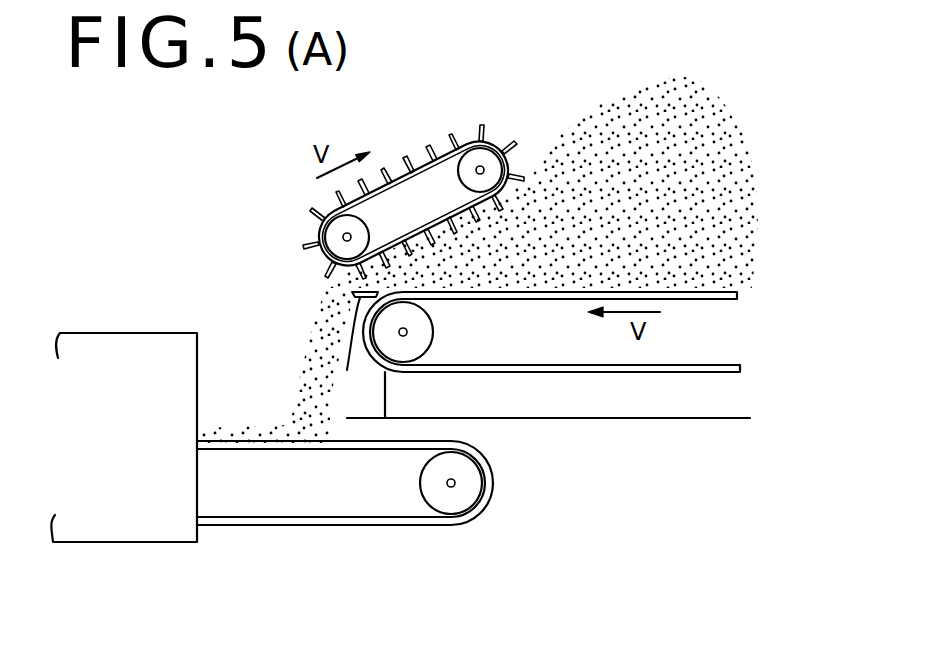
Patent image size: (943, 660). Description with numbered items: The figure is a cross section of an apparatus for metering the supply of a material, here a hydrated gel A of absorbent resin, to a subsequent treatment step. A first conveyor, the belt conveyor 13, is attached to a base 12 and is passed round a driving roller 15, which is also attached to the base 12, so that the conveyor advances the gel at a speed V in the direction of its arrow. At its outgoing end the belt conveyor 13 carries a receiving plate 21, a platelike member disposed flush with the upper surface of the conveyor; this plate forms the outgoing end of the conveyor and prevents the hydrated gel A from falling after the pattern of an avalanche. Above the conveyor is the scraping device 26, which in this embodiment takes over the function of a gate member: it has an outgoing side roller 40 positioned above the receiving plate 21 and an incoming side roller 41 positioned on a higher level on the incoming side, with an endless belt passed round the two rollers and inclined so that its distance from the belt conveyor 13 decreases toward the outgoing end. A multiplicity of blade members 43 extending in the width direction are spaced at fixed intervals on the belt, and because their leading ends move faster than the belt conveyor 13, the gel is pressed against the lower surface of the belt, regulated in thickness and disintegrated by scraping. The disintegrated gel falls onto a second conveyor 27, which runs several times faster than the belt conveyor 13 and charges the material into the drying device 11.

The drying device 11 is at (117, 518).
The conveyor 27 is at (372, 526).
The base 12 is at (621, 400).
The belt conveyor 13 is at (715, 298).
The driving roller 15 is at (420, 335).
The receiving plate 21 is at (357, 350).
The scraping device 26 is at (406, 148).
The outgoing side roller 40 is at (318, 222).
The incoming side roller 41 is at (482, 168).
The blade members 43 is at (387, 173).
The hydrated gel A is at (700, 107).